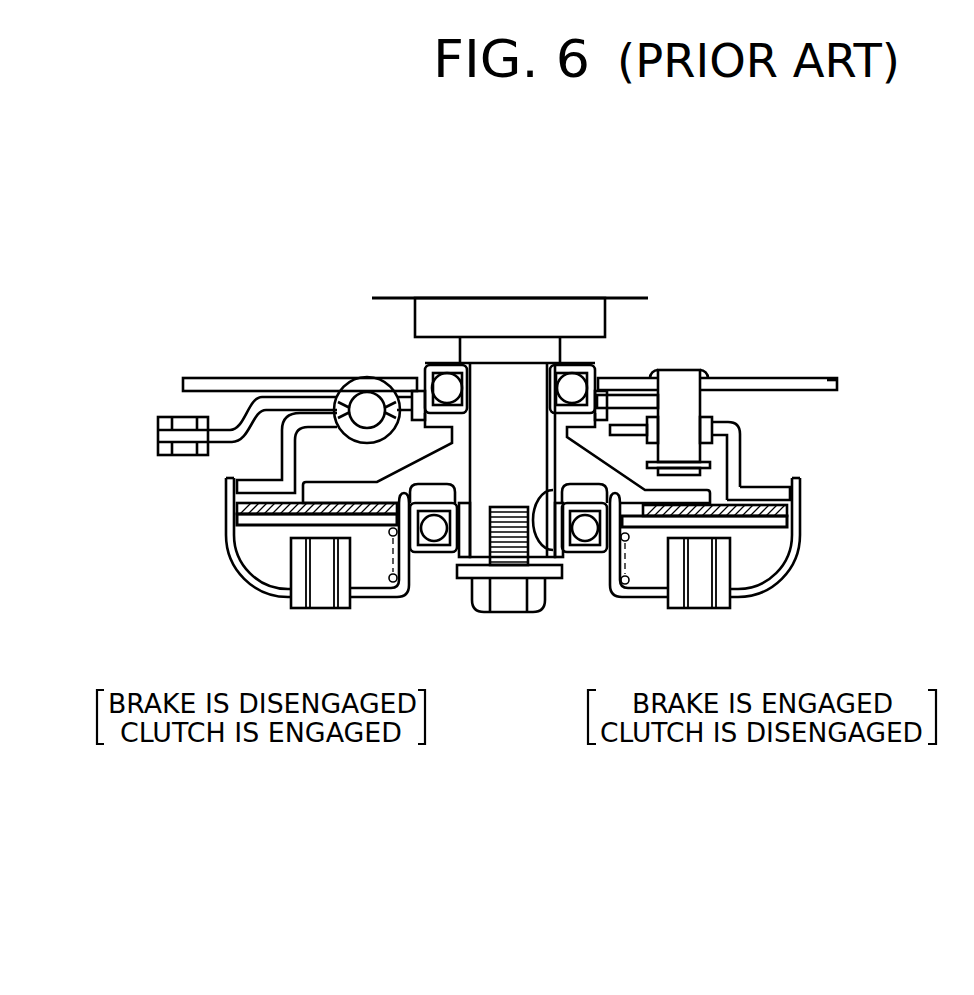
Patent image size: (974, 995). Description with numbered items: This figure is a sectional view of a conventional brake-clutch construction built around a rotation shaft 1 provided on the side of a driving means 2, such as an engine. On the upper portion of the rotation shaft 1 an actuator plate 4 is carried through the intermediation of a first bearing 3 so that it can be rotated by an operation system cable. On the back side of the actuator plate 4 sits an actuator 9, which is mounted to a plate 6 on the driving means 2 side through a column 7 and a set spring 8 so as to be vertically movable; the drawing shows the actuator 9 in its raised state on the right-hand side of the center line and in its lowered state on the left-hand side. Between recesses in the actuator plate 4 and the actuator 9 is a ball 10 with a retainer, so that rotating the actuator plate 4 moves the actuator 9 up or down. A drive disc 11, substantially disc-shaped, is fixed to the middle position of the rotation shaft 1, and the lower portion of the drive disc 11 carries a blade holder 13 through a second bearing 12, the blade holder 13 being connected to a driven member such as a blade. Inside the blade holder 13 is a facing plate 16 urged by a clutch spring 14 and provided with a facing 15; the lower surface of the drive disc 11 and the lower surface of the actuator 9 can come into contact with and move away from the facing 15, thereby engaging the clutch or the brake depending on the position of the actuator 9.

The rotation shaft 1 is at (528, 407).
The driving means 2 is at (455, 298).
The first bearing 3 is at (445, 385).
The actuator plate 4 is at (158, 420).
The plate 6 is at (828, 380).
The column 7 is at (683, 390).
The set spring 8 is at (716, 437).
The actuator 9 is at (277, 407).
The ball 10 is at (323, 410).
The drive disc 11 is at (450, 453).
The second bearing 12 is at (433, 540).
The blade holder 13 is at (772, 588).
The clutch spring 14 is at (387, 555).
The facing 15 is at (770, 497).
The facing plate 16 is at (770, 525).